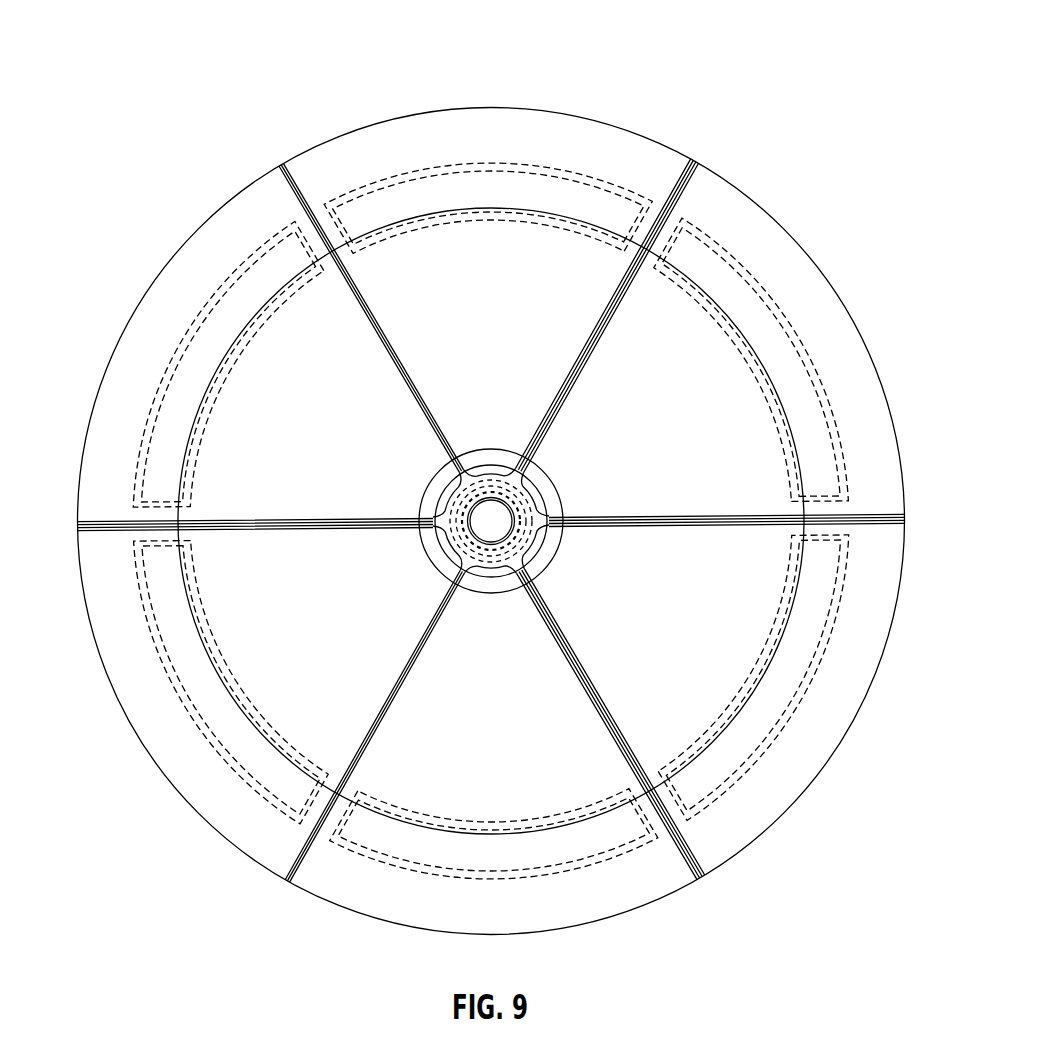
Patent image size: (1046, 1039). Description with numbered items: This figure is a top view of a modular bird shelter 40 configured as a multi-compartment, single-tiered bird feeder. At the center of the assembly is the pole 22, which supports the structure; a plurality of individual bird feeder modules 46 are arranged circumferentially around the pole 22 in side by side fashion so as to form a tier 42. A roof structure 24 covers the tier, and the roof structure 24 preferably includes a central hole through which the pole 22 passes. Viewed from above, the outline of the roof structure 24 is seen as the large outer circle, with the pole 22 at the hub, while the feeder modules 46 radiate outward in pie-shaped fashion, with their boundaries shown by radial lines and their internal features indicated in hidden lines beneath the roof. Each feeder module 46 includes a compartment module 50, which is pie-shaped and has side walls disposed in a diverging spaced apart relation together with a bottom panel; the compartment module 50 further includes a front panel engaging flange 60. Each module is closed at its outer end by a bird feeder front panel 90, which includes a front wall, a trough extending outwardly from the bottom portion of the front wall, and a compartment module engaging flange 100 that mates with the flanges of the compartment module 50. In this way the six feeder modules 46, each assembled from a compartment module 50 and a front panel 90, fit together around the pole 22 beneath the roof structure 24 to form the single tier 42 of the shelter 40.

The pole 22 is at (515, 505).
The roof structure 24 is at (546, 108).
The modular bird shelter 40 is at (810, 160).
The tier 42 is at (615, 178).
The bird feeder module 46 is at (812, 362).
The compartment module 50 is at (775, 652).
The front panel engaging flange 60 is at (700, 812).
The bird feeder front panel 90 is at (760, 285).
The compartment module engaging flange 100 is at (662, 776).